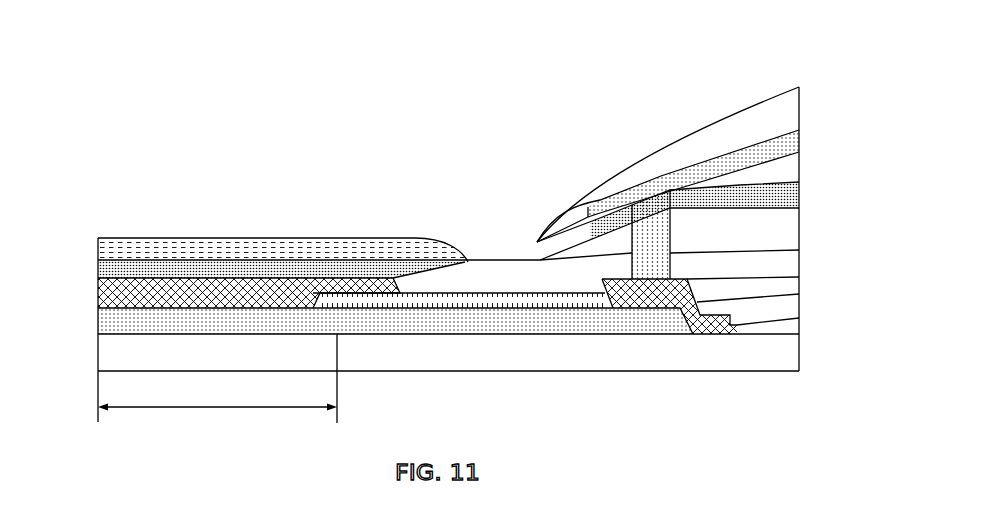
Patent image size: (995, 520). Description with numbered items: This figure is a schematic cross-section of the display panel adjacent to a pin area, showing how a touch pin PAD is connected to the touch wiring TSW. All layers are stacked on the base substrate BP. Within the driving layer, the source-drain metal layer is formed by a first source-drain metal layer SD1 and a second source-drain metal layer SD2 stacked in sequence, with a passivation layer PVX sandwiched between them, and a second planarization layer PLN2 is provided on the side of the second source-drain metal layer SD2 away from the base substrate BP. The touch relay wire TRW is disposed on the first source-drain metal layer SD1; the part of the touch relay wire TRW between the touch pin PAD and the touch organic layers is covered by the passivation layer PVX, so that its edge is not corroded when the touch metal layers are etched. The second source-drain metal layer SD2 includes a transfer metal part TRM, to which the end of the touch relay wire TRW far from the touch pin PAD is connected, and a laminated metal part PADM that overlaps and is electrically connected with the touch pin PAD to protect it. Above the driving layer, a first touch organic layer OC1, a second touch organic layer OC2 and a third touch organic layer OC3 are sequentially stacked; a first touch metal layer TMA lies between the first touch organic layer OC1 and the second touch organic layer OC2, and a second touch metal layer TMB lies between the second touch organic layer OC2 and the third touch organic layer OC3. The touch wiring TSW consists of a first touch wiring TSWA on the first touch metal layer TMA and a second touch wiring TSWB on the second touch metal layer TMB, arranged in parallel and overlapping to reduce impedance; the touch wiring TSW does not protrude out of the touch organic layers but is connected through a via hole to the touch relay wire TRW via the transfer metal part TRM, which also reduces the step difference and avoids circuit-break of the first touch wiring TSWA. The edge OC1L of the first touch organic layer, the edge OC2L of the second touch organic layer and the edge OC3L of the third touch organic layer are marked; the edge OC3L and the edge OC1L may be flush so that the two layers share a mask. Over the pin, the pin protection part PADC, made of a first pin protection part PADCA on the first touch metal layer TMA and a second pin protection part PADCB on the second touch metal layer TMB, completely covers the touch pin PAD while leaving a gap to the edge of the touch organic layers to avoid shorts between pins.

The base substrate BP is at (772, 355).
The first source-drain metal layer SD1 is at (108, 318).
The second source-drain metal layer SD2 is at (108, 296).
The laminated metal part PADM is at (160, 290).
The passivation layer PVX is at (772, 279).
The pin protection part PADC is at (279, 216).
The first pin protection part PADCA is at (247, 270).
The second pin protection part PADCB is at (260, 247).
The touch pin PAD is at (288, 320).
The second planarization layer PLN2 is at (799, 252).
The second touch metal layer TMB is at (110, 247).
The first touch metal layer TMA is at (108, 271).
The third touch organic layer OC3 is at (772, 115).
The second touch organic layer OC2 is at (772, 173).
The first touch organic layer OC1 is at (772, 233).
The touch wiring TSW is at (649, 182).
The first touch wiring TSWA is at (713, 207).
The second touch wiring TSWB is at (725, 163).
The transfer metal part TRM is at (647, 310).
The touch relay wire TRW is at (473, 318).
The edge of the third touch organic layer OC3L is at (533, 237).
The edge of the second touch organic layer OC2L is at (527, 272).
The edge of the first touch organic layer OC1L is at (540, 272).